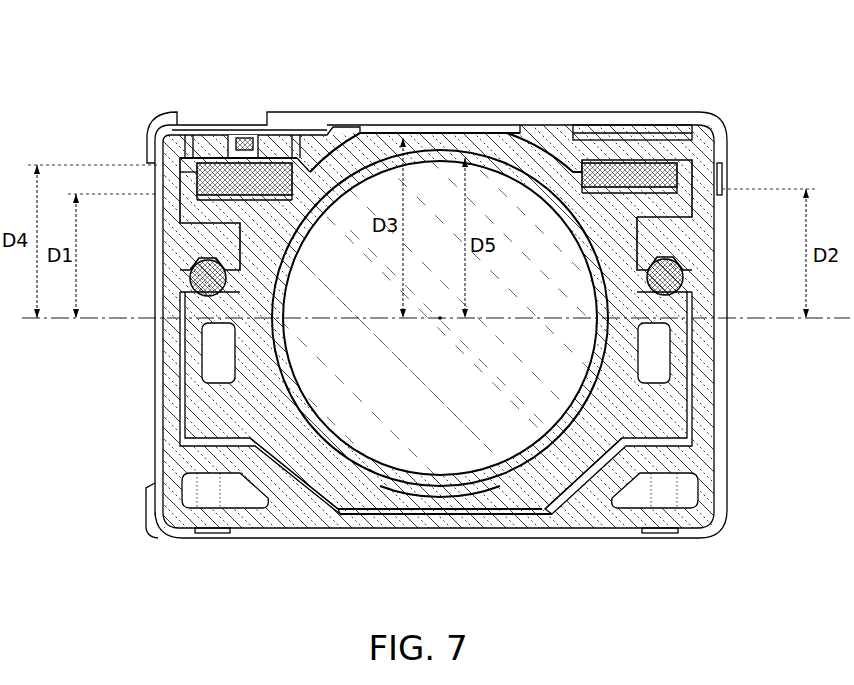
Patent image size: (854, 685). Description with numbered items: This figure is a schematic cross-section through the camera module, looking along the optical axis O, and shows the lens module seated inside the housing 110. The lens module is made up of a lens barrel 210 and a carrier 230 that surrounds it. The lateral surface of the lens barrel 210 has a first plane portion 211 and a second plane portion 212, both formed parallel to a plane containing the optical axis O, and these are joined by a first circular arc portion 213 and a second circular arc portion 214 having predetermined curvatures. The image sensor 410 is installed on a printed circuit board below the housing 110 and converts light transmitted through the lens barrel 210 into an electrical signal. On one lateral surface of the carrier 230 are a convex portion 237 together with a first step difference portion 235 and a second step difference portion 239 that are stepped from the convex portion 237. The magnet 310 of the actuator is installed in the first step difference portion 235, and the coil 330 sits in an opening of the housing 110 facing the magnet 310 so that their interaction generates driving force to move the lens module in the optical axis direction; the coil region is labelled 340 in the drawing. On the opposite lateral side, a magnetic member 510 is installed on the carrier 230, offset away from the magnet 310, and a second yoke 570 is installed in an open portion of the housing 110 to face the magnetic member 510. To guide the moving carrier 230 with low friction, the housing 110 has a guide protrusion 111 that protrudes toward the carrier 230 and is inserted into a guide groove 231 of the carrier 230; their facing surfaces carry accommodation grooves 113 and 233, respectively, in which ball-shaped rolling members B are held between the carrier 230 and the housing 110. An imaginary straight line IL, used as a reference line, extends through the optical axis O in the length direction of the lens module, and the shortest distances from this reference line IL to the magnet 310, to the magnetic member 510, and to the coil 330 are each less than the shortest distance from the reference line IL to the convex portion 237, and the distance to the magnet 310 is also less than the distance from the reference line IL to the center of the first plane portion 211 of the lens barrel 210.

The housing 110 is at (700, 463).
The guide protrusion 111 is at (681, 228).
The accommodation groove 113 is at (200, 260).
The lens barrel 210 is at (525, 504).
The first plane portion 211 is at (457, 143).
The second plane portion 212 is at (440, 500).
The first circular arc portion 213 is at (325, 470).
The second circular arc portion 214 is at (573, 494).
The carrier 230 is at (665, 412).
The guide groove 231 is at (637, 250).
The accommodation groove 233 is at (198, 279).
The first step difference portion 235 is at (318, 160).
The convex portion 237 is at (394, 134).
The second step difference portion 239 is at (562, 162).
The magnet 310 is at (213, 170).
The coil 330 is at (243, 138).
The coil 340 is at (289, 150).
The image sensor 410 is at (370, 488).
The magnetic member 510 is at (667, 167).
The second yoke 570 is at (636, 137).
The rolling member B is at (671, 284).
The imaginary straight line IL is at (540, 320).
The optical axis O is at (442, 332).